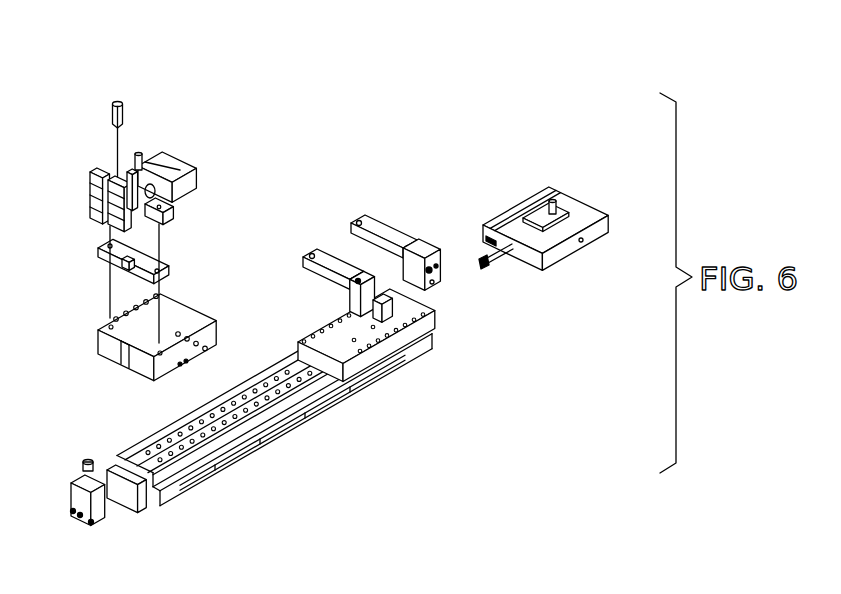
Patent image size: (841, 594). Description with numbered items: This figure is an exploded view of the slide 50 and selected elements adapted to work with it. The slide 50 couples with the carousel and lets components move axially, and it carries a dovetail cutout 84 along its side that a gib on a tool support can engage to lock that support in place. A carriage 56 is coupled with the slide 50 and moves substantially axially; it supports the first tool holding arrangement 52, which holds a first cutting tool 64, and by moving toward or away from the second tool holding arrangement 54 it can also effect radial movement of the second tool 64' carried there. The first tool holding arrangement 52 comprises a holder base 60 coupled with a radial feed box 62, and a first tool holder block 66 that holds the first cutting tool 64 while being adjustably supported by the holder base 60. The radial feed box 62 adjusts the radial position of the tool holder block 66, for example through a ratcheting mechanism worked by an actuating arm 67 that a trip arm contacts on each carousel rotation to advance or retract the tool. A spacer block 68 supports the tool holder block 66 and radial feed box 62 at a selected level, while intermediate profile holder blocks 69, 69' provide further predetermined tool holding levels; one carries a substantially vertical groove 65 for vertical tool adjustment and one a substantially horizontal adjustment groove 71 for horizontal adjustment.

The slide 50 is at (305, 407).
The first tool holding arrangement 52 is at (230, 142).
The second tool holding arrangement 54 is at (593, 167).
The carriage 56 is at (367, 349).
The holder base 60 is at (174, 218).
The radial feed box 62 is at (168, 150).
The first cutting tool 64 is at (138, 74).
The second tool 64' is at (576, 161).
The groove 65 is at (392, 290).
The first tool holder block 66 is at (97, 168).
The actuating arm 67 is at (139, 152).
The spacer block 68 is at (140, 368).
The intermediate profile holder block 69 is at (325, 240).
The intermediate profile holder block 69' is at (391, 192).
The horizontal adjustment groove 71 is at (438, 258).
The dovetail cutout 84 is at (283, 412).